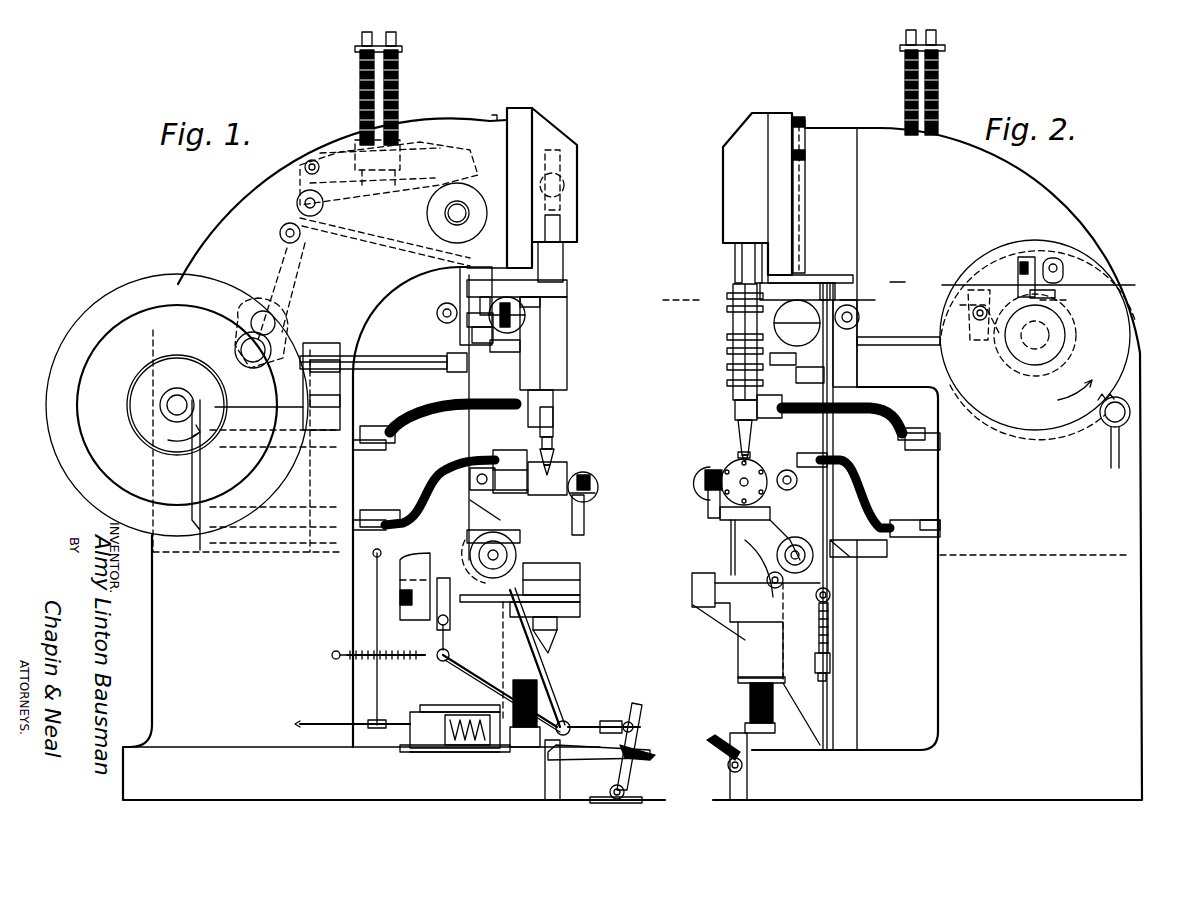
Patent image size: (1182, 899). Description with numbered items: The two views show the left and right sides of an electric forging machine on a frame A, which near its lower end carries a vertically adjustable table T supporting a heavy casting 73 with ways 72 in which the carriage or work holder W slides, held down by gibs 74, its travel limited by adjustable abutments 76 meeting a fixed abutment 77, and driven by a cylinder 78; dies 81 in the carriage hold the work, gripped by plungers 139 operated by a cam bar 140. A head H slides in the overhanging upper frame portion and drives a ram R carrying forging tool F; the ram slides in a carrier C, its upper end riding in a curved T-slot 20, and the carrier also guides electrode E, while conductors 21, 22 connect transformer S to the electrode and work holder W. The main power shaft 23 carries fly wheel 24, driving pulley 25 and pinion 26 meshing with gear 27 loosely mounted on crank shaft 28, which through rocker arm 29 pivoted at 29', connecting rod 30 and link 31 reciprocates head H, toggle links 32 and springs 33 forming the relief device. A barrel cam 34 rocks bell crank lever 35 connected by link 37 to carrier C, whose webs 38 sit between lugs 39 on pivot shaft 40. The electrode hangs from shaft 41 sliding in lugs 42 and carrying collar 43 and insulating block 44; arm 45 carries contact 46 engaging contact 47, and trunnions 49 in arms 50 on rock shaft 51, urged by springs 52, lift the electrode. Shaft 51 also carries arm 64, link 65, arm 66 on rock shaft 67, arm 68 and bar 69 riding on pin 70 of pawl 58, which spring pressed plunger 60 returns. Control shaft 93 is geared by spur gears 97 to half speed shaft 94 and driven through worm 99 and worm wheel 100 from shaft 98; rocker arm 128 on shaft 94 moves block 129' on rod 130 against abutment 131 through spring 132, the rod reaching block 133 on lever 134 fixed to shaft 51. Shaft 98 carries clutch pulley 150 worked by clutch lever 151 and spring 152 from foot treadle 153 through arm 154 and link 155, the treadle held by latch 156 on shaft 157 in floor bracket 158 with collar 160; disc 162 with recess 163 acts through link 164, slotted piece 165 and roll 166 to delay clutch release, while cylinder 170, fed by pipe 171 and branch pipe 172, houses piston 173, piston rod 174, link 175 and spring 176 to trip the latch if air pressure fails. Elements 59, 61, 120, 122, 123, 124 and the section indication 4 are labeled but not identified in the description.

In FIG. 1, the curved T-slot 20 is at (562, 228).
In FIG. 1, the electric conductor 21 is at (445, 415).
In FIG. 2, the electric conductor 21 is at (888, 412).
In FIG. 1, the electric conductor 22 is at (440, 495).
In FIG. 2, the electric conductor 22 is at (876, 508).
In FIG. 1, the main power shaft 23 is at (175, 408).
In FIG. 2, the main power shaft 23 is at (1110, 427).
In FIG. 1, the fly wheel 24 is at (70, 455).
In FIG. 1, the driving pulley 25 is at (130, 389).
In FIG. 2, the pinion 26 is at (1105, 420).
In FIG. 2, the gear 27 is at (1050, 425).
In FIG. 1, the crank shaft 28 is at (272, 345).
In FIG. 2, the crank shaft 28 is at (1013, 365).
In FIG. 1, the rocker arm 29 is at (385, 210).
In FIG. 1, the pivot 29' is at (457, 203).
In FIG. 1, the connecting rod 30 is at (296, 262).
In FIG. 1, the link 31 is at (278, 207).
In FIG. 1, the toggle links 32 is at (440, 135).
In FIG. 1, the springs 33 is at (400, 82).
In FIG. 2, the springs 33 is at (945, 80).
In FIG. 1, the barrel cam 34 is at (275, 322).
In FIG. 1, the bell crank lever 35 is at (290, 407).
In FIG. 1, the link 37 is at (385, 357).
In FIG. 1, the horizontal webs 38 is at (520, 368).
In FIG. 2, the horizontal webs 38 is at (800, 380).
In FIG. 1, the lugs 39 is at (495, 405).
In FIG. 2, the lugs 39 is at (815, 275).
In FIG. 1, the shaft 40 is at (520, 345).
In FIG. 2, the shaft 40 is at (830, 396).
In FIG. 2, the supporting shaft 41 is at (735, 404).
In FIG. 2, the lugs 42 is at (735, 385).
In FIG. 2, the collar 43 is at (733, 312).
In FIG. 2, the insulating block 44 is at (727, 368).
In FIG. 1, the arm 45 is at (520, 318).
In FIG. 2, the arm 45 is at (733, 330).
In FIG. 2, the contact 46 is at (727, 337).
In FIG. 2, the contact 47 is at (727, 350).
In FIG. 1, the trunnions 49 is at (470, 335).
In FIG. 1, the arms 50 is at (470, 320).
In FIG. 2, the arms 50 is at (790, 360).
In FIG. 1, the rock shaft 51 is at (447, 303).
In FIG. 2, the rock shaft 51 is at (875, 300).
In FIG. 1, the springs 52 is at (532, 305).
In FIG. 2, the springs 52 is at (806, 189).
In FIG. 2, the pawl 58 is at (1060, 290).
In FIG. 2, the roller 59 is at (1050, 258).
In FIG. 2, the spring pressed plunger 60 is at (1022, 262).
In FIG. 2, the hub 61 is at (1075, 355).
In FIG. 2, the arm 64 is at (860, 320).
In FIG. 2, the link 65 is at (905, 345).
In FIG. 2, the arm 66 is at (975, 320).
In FIG. 2, the rock shaft 67 is at (960, 300).
In FIG. 2, the arm 68 is at (905, 285).
In FIG. 2, the bar 69 is at (978, 288).
In FIG. 2, the pin 70 is at (1070, 305).
In FIG. 1, the ways 72 is at (545, 497).
In FIG. 1, the heavy casting 73 is at (508, 534).
In FIG. 2, the heavy casting 73 is at (730, 560).
In FIG. 1, the gibs 74 is at (525, 495).
In FIG. 1, the adjustable abutments 76 is at (600, 488).
In FIG. 2, the adjustable abutments 76 is at (705, 482).
In FIG. 1, the fixed abutment 77 is at (598, 490).
In FIG. 2, the fixed abutment 77 is at (700, 498).
In FIG. 2, the cylinder 78 is at (745, 489).
In FIG. 1, the die 81 is at (590, 482).
In FIG. 1, the control shaft 93 is at (400, 562).
In FIG. 2, the control shaft 93 is at (800, 550).
In FIG. 1, the half speed shaft 94 is at (500, 620).
In FIG. 2, the half speed shaft 94 is at (775, 711).
In FIG. 1, the spur gears 97 is at (400, 580).
In FIG. 1, the shaft 98 is at (400, 595).
In FIG. 1, the worm 99 is at (430, 650).
In FIG. 1, the worm wheel 100 is at (515, 552).
In FIG. 2, the gear 120 is at (814, 557).
In FIG. 2, the block 122 is at (840, 462).
In FIG. 2, the link 123 is at (845, 495).
In FIG. 2, the rod 124 is at (795, 615).
In FIG. 2, the rocker arm 128 is at (786, 583).
In FIG. 2, the block 129' is at (863, 601).
In FIG. 1, the rod 130 is at (466, 452).
In FIG. 2, the rod 130 is at (823, 436).
In FIG. 2, the adjustable abutment 131 is at (830, 660).
In FIG. 2, the spring 132 is at (830, 630).
In FIG. 2, the block 133 is at (860, 300).
In FIG. 2, the lever 134 is at (835, 285).
In FIG. 1, the plunger 139 is at (545, 444).
In FIG. 1, the cam bar 140 is at (480, 490).
In FIG. 1, the clutch pulley 150 is at (437, 605).
In FIG. 1, the clutch lever 151 is at (440, 622).
In FIG. 1, the spring 152 is at (345, 658).
In FIG. 1, the foot treadle 153 is at (640, 748).
In FIG. 2, the foot treadle 153 is at (723, 747).
In FIG. 1, the arm 154 is at (525, 748).
In FIG. 1, the link 155 is at (440, 665).
In FIG. 1, the latch 156 is at (635, 728).
In FIG. 1, the shaft 157 is at (610, 790).
In FIG. 1, the floor bracket 158 is at (640, 800).
In FIG. 2, the floor bracket 158 is at (731, 758).
In FIG. 1, the collar 160 is at (628, 790).
In FIG. 1, the circular disc 162 is at (580, 530).
In FIG. 1, the recess 163 is at (508, 519).
In FIG. 1, the link 164 is at (545, 660).
In FIG. 1, the slotted piece 165 is at (580, 570).
In FIG. 1, the roll 166 is at (580, 580).
In FIG. 1, the cylinder 170 is at (420, 748).
In FIG. 1, the pipe 171 is at (300, 726).
In FIG. 1, the branch pipe 172 is at (375, 695).
In FIG. 1, the piston 173 is at (445, 750).
In FIG. 1, the piston rod 174 is at (497, 760).
In FIG. 1, the link 175 is at (585, 727).
In FIG. 1, the spring 176 is at (472, 748).
In FIG. 1, the head H is at (582, 185).
In FIG. 2, the head H is at (735, 210).
In FIG. 1, the carrier C is at (520, 335).
In FIG. 2, the carrier C is at (733, 290).
In FIG. 1, the ram R is at (560, 397).
In FIG. 2, the ram R is at (735, 410).
In FIG. 1, the forging tool F is at (552, 452).
In FIG. 2, the forging tool F is at (735, 445).
In FIG. 1, the electrode E is at (548, 470).
In FIG. 2, the electrode E is at (735, 452).
In FIG. 1, the carriage or work piece holder W is at (540, 480).
In FIG. 1, the transformer S is at (350, 470).
In FIG. 1, the frame A is at (281, 615).
In FIG. 2, the frame A is at (995, 629).
In FIG. 1, the table T is at (580, 608).
In FIG. 2, the table T is at (700, 600).
In FIG. 2, the section line 4 is at (667, 314).